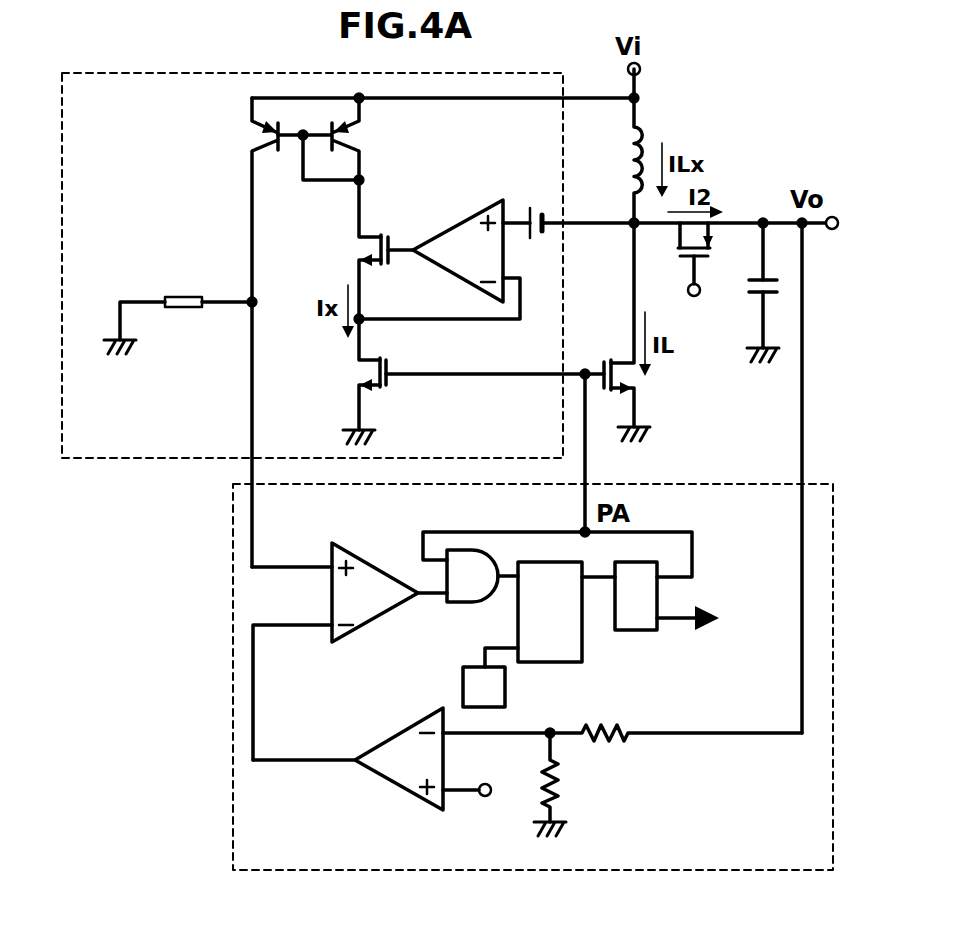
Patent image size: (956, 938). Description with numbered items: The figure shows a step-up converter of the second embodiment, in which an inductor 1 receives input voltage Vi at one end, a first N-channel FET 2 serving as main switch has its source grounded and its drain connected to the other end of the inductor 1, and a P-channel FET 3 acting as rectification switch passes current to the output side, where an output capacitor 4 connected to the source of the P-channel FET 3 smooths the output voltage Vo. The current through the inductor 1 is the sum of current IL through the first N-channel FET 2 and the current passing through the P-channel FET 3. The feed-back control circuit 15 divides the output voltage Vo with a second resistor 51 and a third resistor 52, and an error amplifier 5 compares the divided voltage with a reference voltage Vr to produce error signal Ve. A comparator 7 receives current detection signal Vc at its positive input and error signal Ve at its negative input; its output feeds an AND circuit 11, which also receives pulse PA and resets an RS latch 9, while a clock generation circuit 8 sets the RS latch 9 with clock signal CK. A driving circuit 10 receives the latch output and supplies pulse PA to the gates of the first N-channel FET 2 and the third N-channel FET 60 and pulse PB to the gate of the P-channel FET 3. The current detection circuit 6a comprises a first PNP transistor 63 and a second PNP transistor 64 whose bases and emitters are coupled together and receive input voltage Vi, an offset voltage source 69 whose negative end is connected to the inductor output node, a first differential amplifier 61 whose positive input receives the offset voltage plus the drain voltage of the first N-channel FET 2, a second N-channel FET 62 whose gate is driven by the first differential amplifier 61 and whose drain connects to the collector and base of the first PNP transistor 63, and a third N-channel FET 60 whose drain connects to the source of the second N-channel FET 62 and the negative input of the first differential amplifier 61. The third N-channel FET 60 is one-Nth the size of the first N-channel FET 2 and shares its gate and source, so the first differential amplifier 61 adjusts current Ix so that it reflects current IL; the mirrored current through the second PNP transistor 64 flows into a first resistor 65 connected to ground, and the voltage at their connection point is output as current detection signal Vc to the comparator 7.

The inductor 1 is at (645, 140).
The first N-channel FET 2 is at (626, 370).
The P-channel FET 3 is at (681, 228).
The output capacitor 4 is at (752, 300).
The error amplifier 5 is at (446, 758).
The current detection circuit 6a is at (160, 458).
The comparator 7 is at (355, 556).
The clock generation circuit 8 is at (507, 688).
The RS latch 9 is at (583, 642).
The driving circuit 10 is at (658, 630).
The AND circuit 11 is at (446, 602).
The feed-back control circuit 15 is at (233, 680).
The second resistor 51 is at (612, 740).
The third resistor 52 is at (562, 780).
The third N-channel FET 60 is at (390, 382).
The first differential amplifier 61 is at (452, 222).
The second N-channel FET 62 is at (393, 265).
The first PNP transistor 63 is at (350, 136).
The second PNP transistor 64 is at (264, 128).
The first resistor 65 is at (183, 296).
The offset voltage source 69 is at (528, 208).